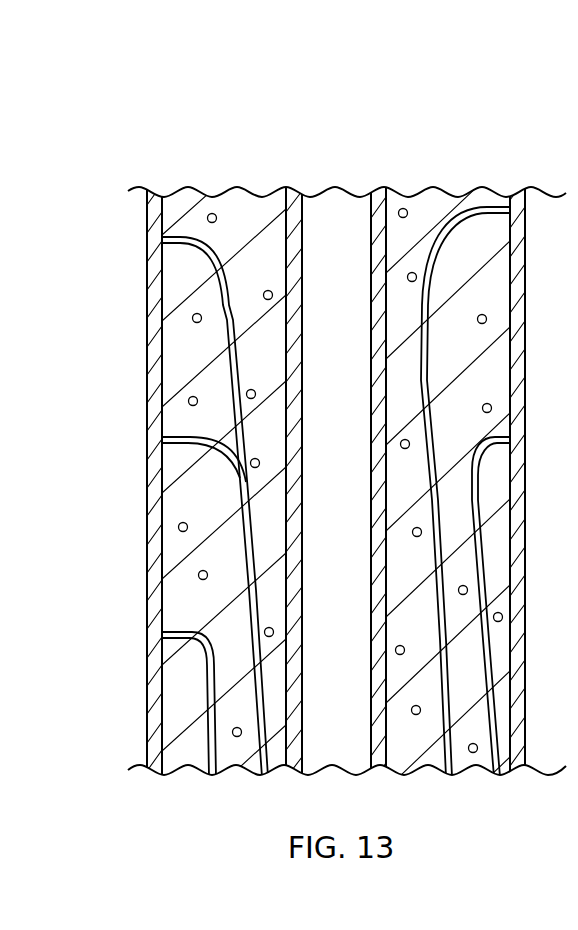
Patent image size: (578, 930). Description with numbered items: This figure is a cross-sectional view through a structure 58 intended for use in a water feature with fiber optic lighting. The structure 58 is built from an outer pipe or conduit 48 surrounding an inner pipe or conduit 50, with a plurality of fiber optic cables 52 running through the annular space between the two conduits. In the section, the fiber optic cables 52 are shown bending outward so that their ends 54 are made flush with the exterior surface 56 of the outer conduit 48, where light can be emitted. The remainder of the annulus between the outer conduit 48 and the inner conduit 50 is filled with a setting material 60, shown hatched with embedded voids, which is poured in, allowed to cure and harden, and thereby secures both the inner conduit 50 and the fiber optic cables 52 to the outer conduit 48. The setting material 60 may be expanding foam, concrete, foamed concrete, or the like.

The structure 58 is at (215, 120).
The inner pipe or conduit 50 is at (337, 215).
The outer pipe or conduit 48 is at (162, 237).
The exterior surface 56 is at (147, 345).
The ends of the fiber optic cables 54 is at (147, 440).
The setting material 60 is at (185, 502).
The fiber optic cables 52 is at (252, 568).